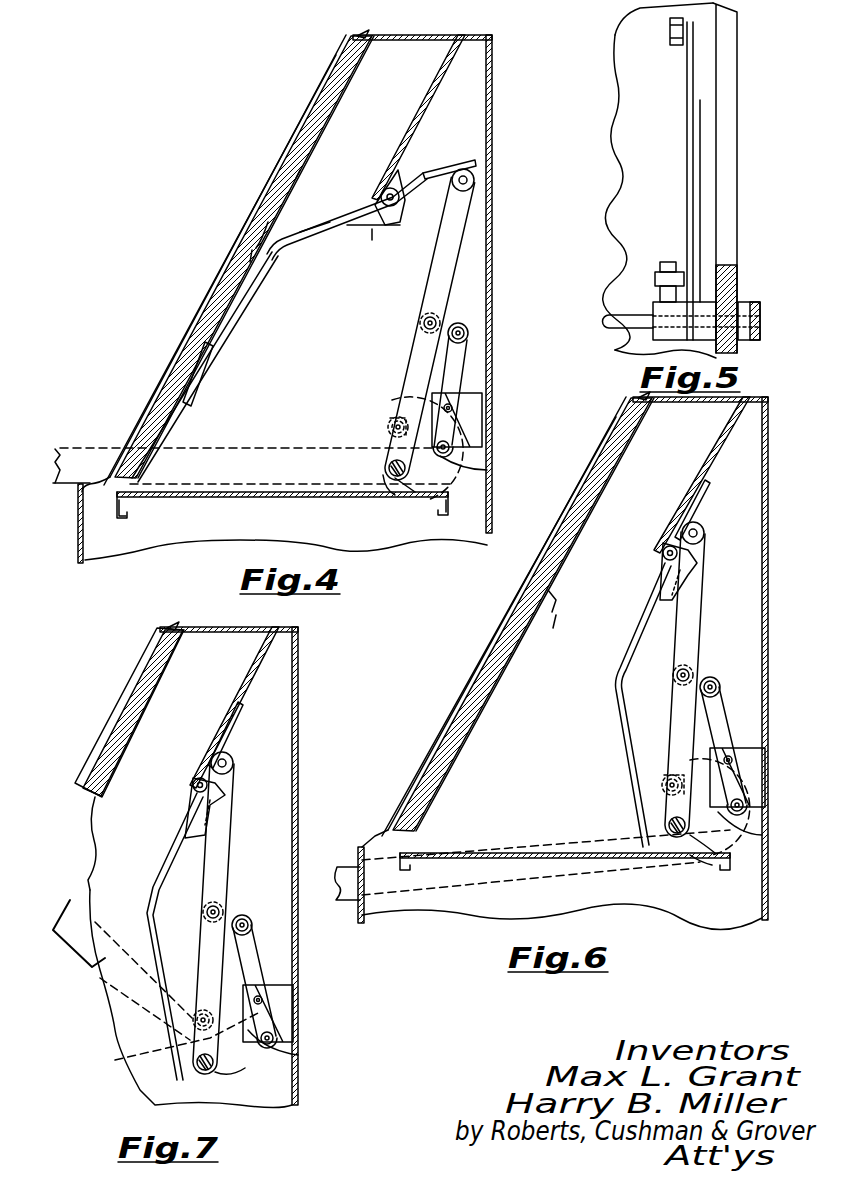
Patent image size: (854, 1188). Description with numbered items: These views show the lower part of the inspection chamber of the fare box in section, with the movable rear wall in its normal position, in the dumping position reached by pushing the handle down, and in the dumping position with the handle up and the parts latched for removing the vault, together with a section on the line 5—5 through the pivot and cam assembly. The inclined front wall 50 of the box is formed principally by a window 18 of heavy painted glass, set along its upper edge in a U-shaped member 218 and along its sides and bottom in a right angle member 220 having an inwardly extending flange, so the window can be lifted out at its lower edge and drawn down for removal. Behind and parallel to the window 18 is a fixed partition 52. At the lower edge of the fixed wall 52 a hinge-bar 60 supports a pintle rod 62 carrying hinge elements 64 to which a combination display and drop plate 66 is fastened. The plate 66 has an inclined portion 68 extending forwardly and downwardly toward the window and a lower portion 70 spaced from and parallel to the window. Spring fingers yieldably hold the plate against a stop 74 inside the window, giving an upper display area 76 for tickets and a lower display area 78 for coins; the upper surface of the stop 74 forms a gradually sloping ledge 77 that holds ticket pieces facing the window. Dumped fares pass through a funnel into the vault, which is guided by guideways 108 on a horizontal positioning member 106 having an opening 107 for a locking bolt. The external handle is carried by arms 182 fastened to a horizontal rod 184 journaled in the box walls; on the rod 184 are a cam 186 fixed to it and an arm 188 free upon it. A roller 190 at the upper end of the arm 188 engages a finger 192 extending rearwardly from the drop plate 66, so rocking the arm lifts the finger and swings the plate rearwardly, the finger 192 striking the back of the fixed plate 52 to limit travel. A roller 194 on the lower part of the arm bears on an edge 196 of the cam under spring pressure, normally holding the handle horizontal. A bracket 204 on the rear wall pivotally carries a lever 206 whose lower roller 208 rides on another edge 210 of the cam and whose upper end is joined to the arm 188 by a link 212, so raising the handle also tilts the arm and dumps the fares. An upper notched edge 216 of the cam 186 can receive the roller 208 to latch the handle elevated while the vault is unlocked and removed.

In FIG. 4, the section line 5 is at (467, 148).
In FIG. 4, the window 18 is at (322, 108).
In FIG. 6, the window 18 is at (480, 692).
In FIG. 7, the window 18 is at (120, 725).
In FIG. 4, the inclined front wall 50 is at (345, 76).
In FIG. 6, the inclined front wall 50 is at (618, 456).
In FIG. 7, the inclined front wall 50 is at (143, 672).
In FIG. 4, the fixed partition 52 is at (432, 96).
In FIG. 6, the fixed partition 52 is at (708, 455).
In FIG. 7, the fixed partition 52 is at (240, 672).
In FIG. 4, the hinge-bar 60 is at (384, 190).
In FIG. 6, the hinge-bar 60 is at (663, 548).
In FIG. 7, the hinge-bar 60 is at (190, 772).
In FIG. 4, the pintle rod 62 is at (400, 215).
In FIG. 6, the pintle rod 62 is at (660, 555).
In FIG. 7, the pintle rod 62 is at (185, 790).
In FIG. 4, the hinge elements 64 is at (382, 236).
In FIG. 6, the hinge elements 64 is at (660, 588).
In FIG. 7, the hinge elements 64 is at (225, 795).
In FIG. 4, the combination display and drop plate 66 is at (297, 272).
In FIG. 6, the combination display and drop plate 66 is at (622, 633).
In FIG. 7, the combination display and drop plate 66 is at (140, 885).
In FIG. 4, the inclined portion 68 is at (336, 240).
In FIG. 4, the downwardly and forwardly inclined portion 70 is at (242, 318).
In FIG. 4, the stop 74 is at (250, 258).
In FIG. 6, the stop 74 is at (556, 625).
In FIG. 4, the ticket display area 76 is at (290, 185).
In FIG. 4, the ledge 77 is at (265, 226).
In FIG. 6, the ledge 77 is at (553, 630).
In FIG. 4, the coin display area 78 is at (230, 300).
In FIG. 4, the positioning member 106 is at (440, 500).
In FIG. 4, the opening 107 is at (235, 492).
In FIG. 6, the opening 107 is at (515, 853).
In FIG. 4, the guideways 108 is at (130, 515).
In FIG. 4, the arms 182 is at (88, 455).
In FIG. 5, the arms 182 is at (748, 305).
In FIG. 6, the arms 182 is at (340, 870).
In FIG. 7, the arms 182 is at (75, 960).
In FIG. 4, the rod 184 is at (392, 478).
In FIG. 5, the rod 184 is at (640, 326).
In FIG. 6, the rod 184 is at (675, 835).
In FIG. 7, the rod 184 is at (200, 1070).
In FIG. 4, the cam 186 is at (420, 500).
In FIG. 5, the cam 186 is at (653, 310).
In FIG. 6, the cam 186 is at (702, 860).
In FIG. 7, the cam 186 is at (232, 1078).
In FIG. 4, the arm 188 is at (410, 355).
In FIG. 5, the arm 188 is at (688, 195).
In FIG. 6, the arm 188 is at (700, 642).
In FIG. 7, the arm 188 is at (222, 870).
In FIG. 4, the roller 190 is at (478, 177).
In FIG. 5, the roller 190 is at (670, 40).
In FIG. 6, the roller 190 is at (704, 526).
In FIG. 7, the roller 190 is at (230, 755).
In FIG. 4, the finger 192 is at (430, 163).
In FIG. 6, the finger 192 is at (695, 500).
In FIG. 7, the finger 192 is at (225, 720).
In FIG. 4, the roller 194 is at (390, 432).
In FIG. 5, the roller 194 is at (655, 280).
In FIG. 6, the roller 194 is at (660, 790).
In FIG. 7, the roller 194 is at (192, 1030).
In FIG. 4, the cam edge 196 is at (392, 420).
In FIG. 5, the cam edge 196 is at (660, 268).
In FIG. 6, the cam edge 196 is at (660, 778).
In FIG. 7, the cam edge 196 is at (268, 1018).
In FIG. 4, the bracket 204 is at (480, 425).
In FIG. 6, the bracket 204 is at (752, 768).
In FIG. 7, the bracket 204 is at (282, 1010).
In FIG. 4, the lever 206 is at (480, 378).
In FIG. 5, the lever 206 is at (700, 235).
In FIG. 6, the lever 206 is at (740, 720).
In FIG. 7, the lever 206 is at (268, 955).
In FIG. 4, the roller 208 is at (465, 452).
In FIG. 6, the roller 208 is at (760, 808).
In FIG. 7, the roller 208 is at (280, 1045).
In FIG. 4, the cam edge 210 is at (480, 478).
In FIG. 6, the cam edge 210 is at (762, 833).
In FIG. 4, the link 212 is at (455, 328).
In FIG. 6, the link 212 is at (700, 682).
In FIG. 7, the link 212 is at (240, 912).
In FIG. 4, the notched edge 216 is at (398, 390).
In FIG. 6, the notched edge 216 is at (660, 758).
In FIG. 7, the notched edge 216 is at (262, 1060).
In FIG. 4, the U-shaped member 218 is at (350, 40).
In FIG. 6, the U-shaped member 218 is at (630, 402).
In FIG. 7, the U-shaped member 218 is at (160, 626).
In FIG. 4, the right angle member 220 is at (110, 485).